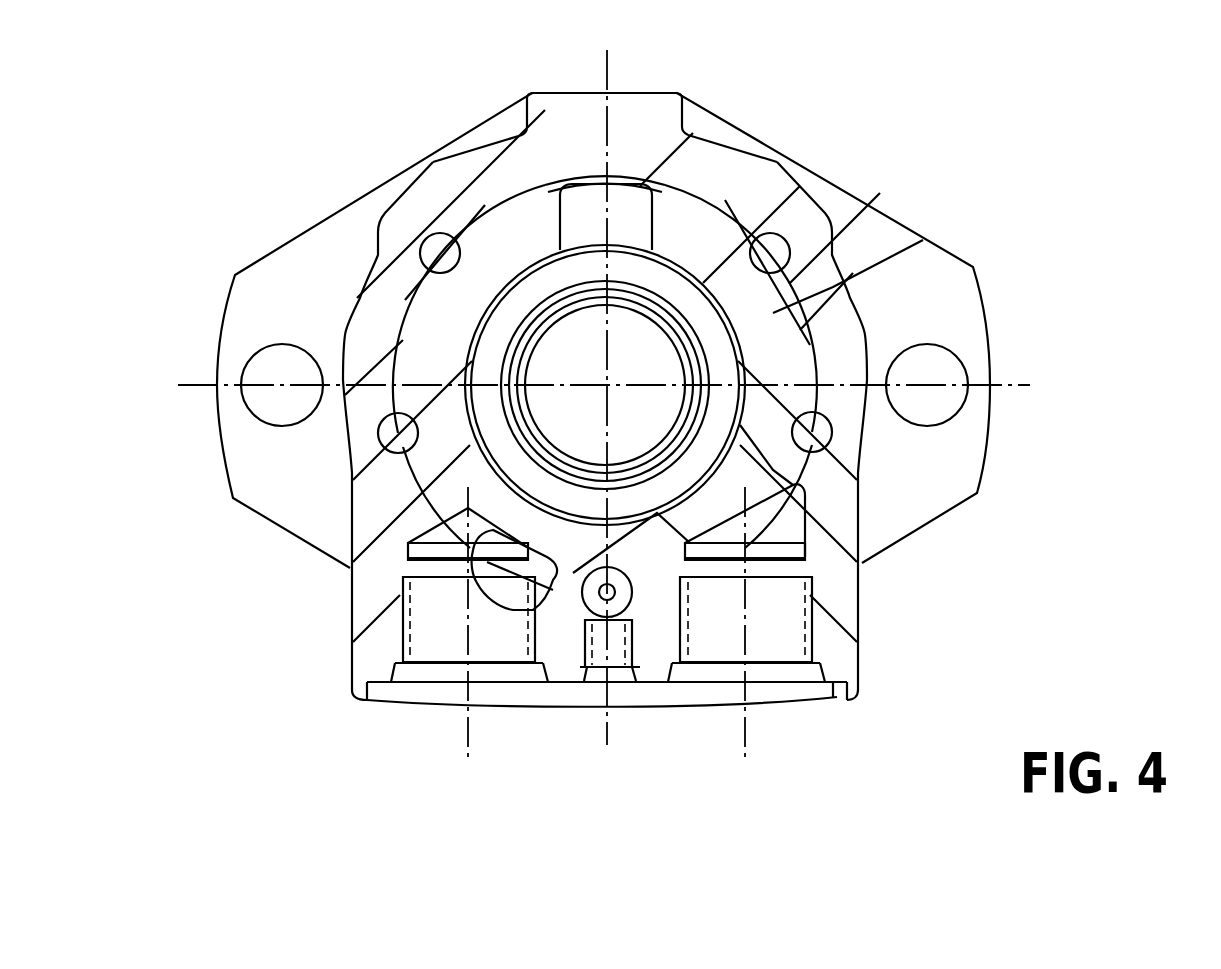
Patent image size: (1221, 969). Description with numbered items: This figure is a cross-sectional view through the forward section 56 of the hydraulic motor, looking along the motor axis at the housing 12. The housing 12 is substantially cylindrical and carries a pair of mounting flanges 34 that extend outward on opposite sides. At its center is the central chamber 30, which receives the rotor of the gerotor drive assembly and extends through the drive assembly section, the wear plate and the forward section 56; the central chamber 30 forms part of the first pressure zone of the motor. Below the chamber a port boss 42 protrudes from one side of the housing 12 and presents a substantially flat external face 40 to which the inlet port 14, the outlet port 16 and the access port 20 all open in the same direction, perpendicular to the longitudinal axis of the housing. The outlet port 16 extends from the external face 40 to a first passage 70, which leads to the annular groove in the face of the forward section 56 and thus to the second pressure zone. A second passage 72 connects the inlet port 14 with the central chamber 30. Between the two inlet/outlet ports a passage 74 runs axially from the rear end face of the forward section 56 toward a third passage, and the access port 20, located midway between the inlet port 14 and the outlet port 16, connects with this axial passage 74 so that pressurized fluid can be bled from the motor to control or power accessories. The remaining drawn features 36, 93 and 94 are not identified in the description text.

The housing 12 is at (507, 72).
The inlet port 14 is at (780, 640).
The outlet port 16 is at (432, 630).
The access port 20 is at (597, 643).
The central chamber 30 is at (640, 265).
The mounting flanges 34 is at (262, 282).
The shaft bore 36 is at (610, 383).
The external face 40 is at (833, 700).
The port boss 42 is at (847, 655).
The forward section 56 is at (655, 110).
The first passage 70 is at (507, 597).
The second passage 72 is at (783, 533).
The passage 74 is at (608, 603).
The housing rim 93 is at (923, 240).
The bolt hole 94 is at (448, 235).